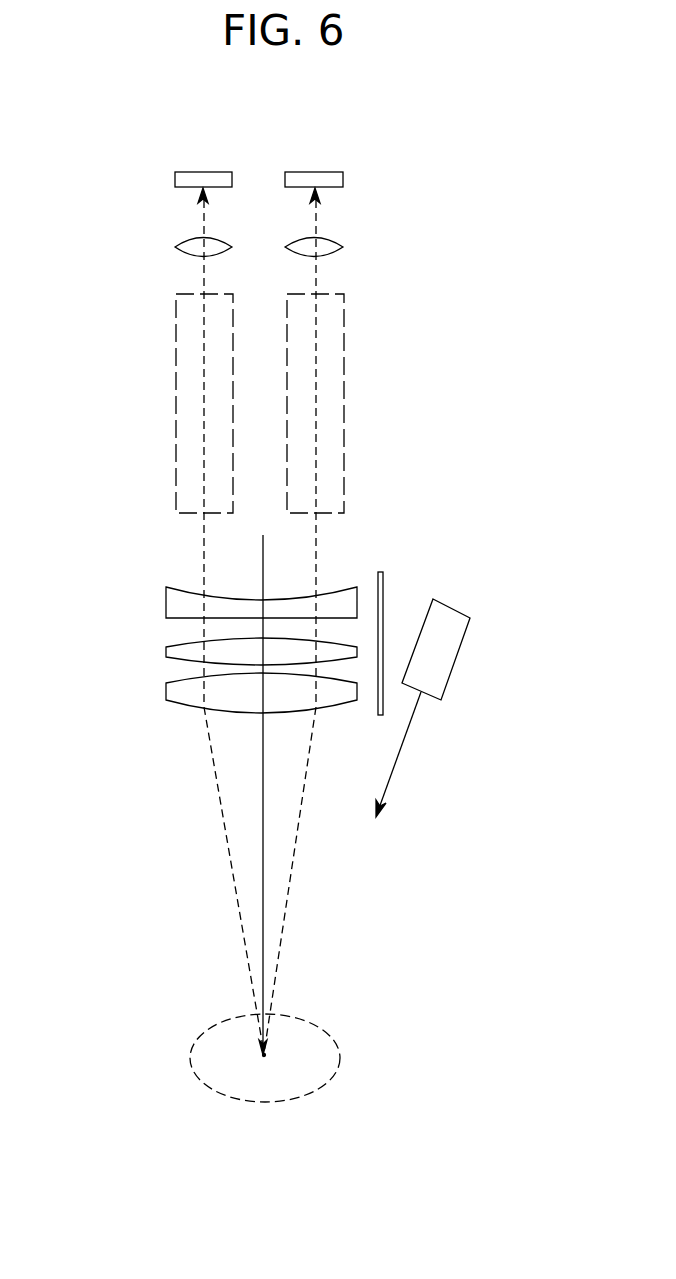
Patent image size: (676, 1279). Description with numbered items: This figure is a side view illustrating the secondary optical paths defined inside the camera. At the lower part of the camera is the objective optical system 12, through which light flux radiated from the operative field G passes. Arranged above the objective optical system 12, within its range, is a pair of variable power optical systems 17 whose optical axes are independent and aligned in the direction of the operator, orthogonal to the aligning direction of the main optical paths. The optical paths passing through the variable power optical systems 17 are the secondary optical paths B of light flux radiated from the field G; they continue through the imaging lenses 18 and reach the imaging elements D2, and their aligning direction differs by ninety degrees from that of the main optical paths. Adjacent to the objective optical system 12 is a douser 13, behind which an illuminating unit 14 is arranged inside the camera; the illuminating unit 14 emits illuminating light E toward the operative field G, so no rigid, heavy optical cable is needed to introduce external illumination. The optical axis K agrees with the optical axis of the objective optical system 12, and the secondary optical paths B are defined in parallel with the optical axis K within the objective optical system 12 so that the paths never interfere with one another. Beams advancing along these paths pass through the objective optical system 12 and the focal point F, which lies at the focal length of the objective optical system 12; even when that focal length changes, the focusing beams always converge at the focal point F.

The imaging elements D2 is at (175, 180).
The imaging lenses 18 is at (175, 247).
The variable power optical systems 17 is at (176, 405).
The secondary optical paths B is at (205, 562).
The optical axis K is at (262, 779).
The objective optical system 12 is at (135, 596).
The douser 13 is at (383, 598).
The illuminating unit 14 is at (457, 655).
The illuminating light E is at (393, 779).
The operative field G is at (216, 1025).
The focal point F is at (264, 1056).